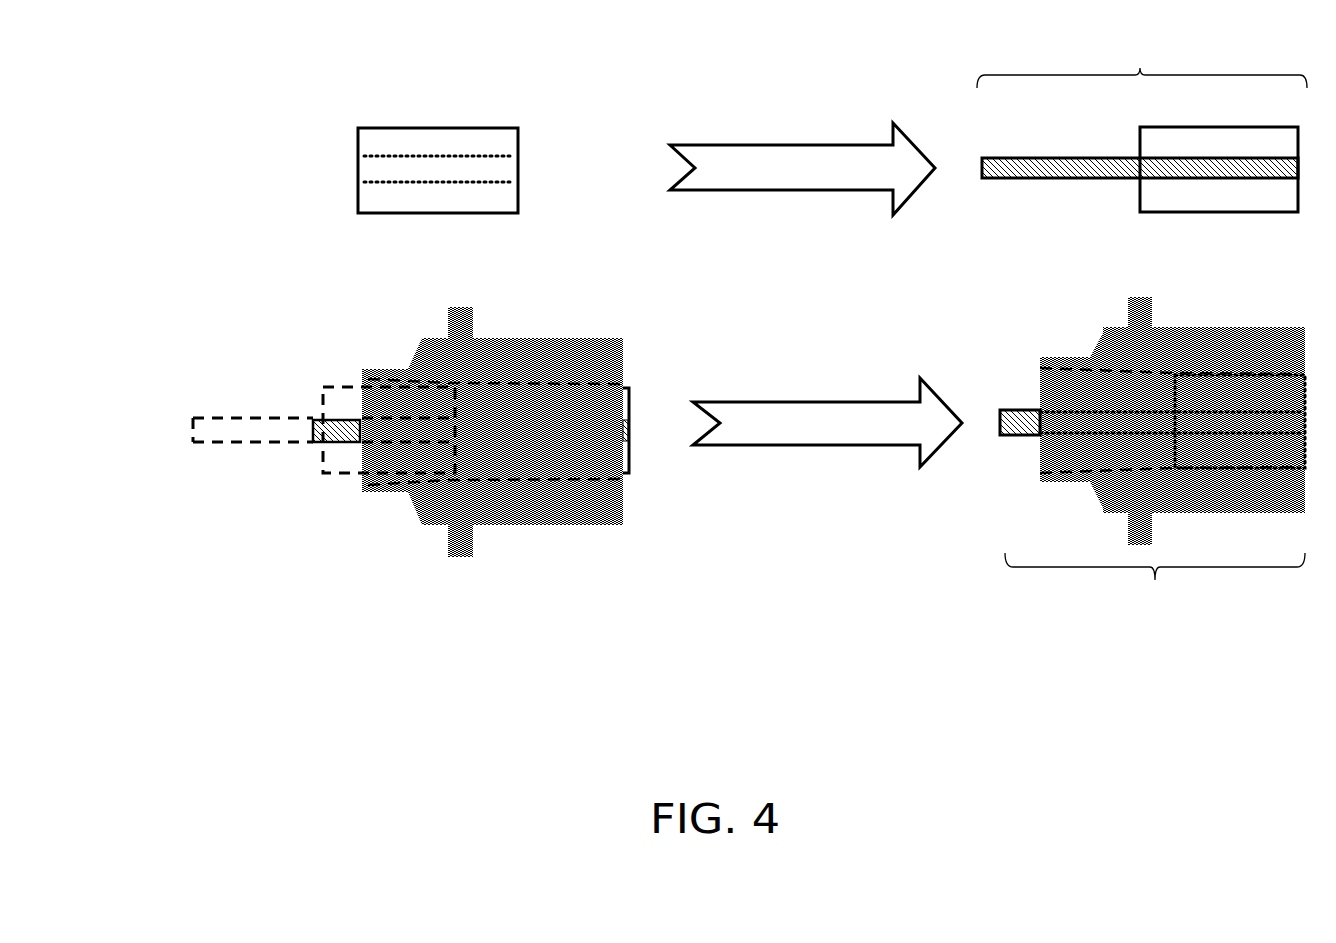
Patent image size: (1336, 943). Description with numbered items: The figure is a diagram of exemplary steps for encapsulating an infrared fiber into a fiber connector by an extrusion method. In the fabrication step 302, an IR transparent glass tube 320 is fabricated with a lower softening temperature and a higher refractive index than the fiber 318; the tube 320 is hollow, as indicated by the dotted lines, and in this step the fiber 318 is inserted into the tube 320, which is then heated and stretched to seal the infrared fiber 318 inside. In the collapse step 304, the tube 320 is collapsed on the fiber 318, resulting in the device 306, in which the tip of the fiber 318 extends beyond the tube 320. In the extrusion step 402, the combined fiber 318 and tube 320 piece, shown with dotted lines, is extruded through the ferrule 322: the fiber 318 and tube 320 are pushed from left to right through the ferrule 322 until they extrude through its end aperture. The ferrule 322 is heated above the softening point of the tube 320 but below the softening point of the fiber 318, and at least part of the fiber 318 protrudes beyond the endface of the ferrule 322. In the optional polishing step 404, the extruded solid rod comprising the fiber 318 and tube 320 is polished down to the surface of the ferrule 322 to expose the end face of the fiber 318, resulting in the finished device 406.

The fabrication step 302 is at (547, 220).
The collapse step 304 is at (740, 130).
The device 306 is at (1142, 67).
The fiber 318 is at (980, 157).
The IR transparent glass tube 320 is at (350, 137).
The ferrule 322 is at (626, 517).
The extrusion step 402 is at (480, 644).
The polishing step 404 is at (804, 448).
The device 406 is at (1155, 581).